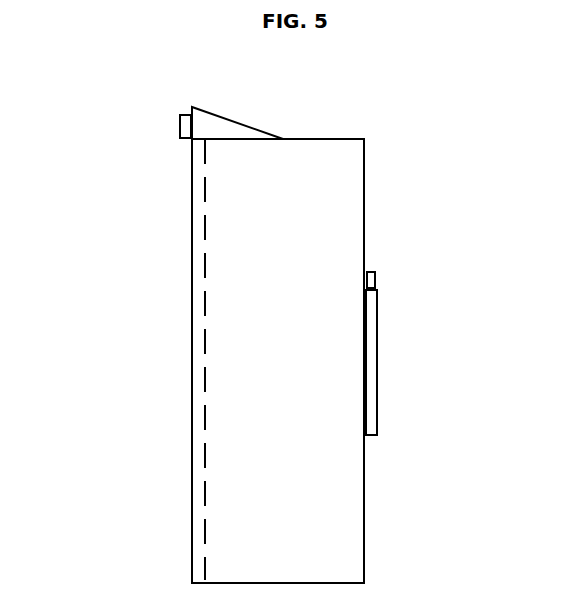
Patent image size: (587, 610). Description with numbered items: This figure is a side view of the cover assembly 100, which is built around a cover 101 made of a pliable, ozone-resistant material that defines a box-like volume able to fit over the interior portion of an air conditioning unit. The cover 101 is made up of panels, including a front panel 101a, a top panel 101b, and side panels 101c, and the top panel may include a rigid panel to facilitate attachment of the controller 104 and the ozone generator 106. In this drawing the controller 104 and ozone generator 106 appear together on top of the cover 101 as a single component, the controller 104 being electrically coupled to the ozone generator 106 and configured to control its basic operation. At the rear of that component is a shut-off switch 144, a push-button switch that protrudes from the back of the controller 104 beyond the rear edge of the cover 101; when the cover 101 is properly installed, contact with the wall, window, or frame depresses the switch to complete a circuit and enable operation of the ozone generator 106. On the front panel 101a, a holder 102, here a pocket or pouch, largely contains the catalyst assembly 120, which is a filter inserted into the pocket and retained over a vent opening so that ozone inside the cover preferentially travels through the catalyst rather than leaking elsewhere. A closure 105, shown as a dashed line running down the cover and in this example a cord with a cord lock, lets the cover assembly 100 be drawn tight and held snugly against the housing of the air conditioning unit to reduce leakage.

The cover assembly 100 is at (124, 101).
The cover 101 is at (365, 143).
The front panel 101a is at (367, 490).
The top panel 101b is at (308, 138).
The side panels 101c is at (312, 484).
The holder 102 is at (372, 348).
The controller 104 is at (250, 99).
The ozone generator 106 is at (245, 123).
The closure 105 is at (205, 382).
The catalyst assembly 120 is at (375, 277).
The shut-off switch 144 is at (185, 115).